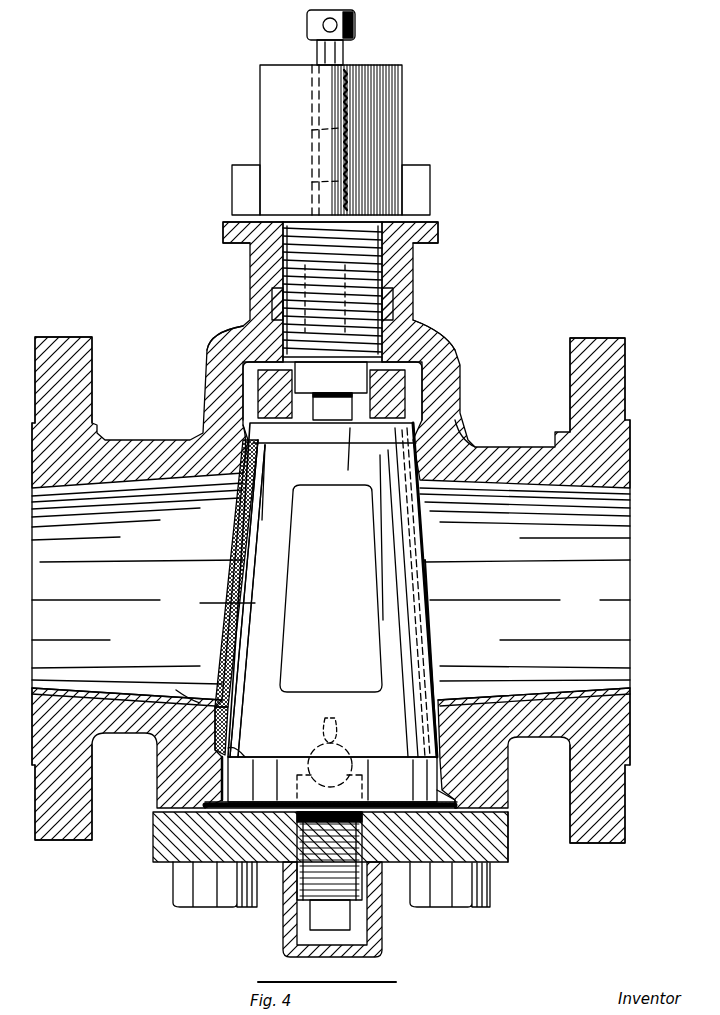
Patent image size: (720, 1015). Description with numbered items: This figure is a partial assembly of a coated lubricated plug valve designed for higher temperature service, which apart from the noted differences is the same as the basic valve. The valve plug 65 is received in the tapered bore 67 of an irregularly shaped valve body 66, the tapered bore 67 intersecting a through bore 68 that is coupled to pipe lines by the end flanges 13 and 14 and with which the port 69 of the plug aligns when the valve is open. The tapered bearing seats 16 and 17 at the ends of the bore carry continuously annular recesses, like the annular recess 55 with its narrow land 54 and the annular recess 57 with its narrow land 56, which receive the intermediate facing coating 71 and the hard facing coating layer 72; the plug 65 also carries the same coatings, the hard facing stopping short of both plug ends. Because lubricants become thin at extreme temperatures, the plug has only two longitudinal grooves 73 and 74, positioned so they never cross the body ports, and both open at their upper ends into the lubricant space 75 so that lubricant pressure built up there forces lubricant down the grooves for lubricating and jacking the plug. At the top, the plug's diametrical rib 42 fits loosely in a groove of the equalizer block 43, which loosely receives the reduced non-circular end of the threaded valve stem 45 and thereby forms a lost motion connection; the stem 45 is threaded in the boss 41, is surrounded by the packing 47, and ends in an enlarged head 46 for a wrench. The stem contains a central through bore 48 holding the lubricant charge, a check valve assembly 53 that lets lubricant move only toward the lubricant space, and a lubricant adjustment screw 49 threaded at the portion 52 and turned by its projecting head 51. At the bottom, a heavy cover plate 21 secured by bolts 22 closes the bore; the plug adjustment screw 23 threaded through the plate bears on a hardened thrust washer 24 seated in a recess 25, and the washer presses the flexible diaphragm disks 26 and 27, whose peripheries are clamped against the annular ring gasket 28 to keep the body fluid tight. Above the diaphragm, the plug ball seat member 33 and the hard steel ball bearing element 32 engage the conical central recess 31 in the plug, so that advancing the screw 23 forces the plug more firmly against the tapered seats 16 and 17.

The end flange 13 is at (62, 337).
The end flange 14 is at (598, 338).
The tapered bearing seat 16 is at (440, 697).
The tapered bearing seat 17 is at (455, 492).
The cover plate 21 is at (510, 840).
The bolts 22 is at (180, 898).
The plug adjustment screw 23 is at (380, 935).
The thrust washer 24 is at (295, 830).
The recess 25 is at (370, 830).
The diaphragm disk 26 is at (170, 832).
The diaphragm disk 27 is at (215, 808).
The annular ring gasket 28 is at (470, 800).
The conical central recess 31 is at (333, 712).
The ball bearing element 32 is at (320, 745).
The plug ball seat member 33 is at (345, 750).
The boss 41 is at (435, 342).
The diametrical upstanding rib 42 is at (350, 428).
The equalizer block 43 is at (418, 335).
The valve stem 45 is at (420, 246).
The enlarged head 46 is at (402, 118).
The packing 47 is at (392, 302).
The central through bore 48 is at (350, 100).
The lubricant adjustment screw 49 is at (343, 55).
The projecting head 51 is at (357, 26).
The threaded portion 52 is at (350, 150).
The check valve assembly 53 is at (350, 290).
The annular land 54 is at (222, 773).
The annular recess 55 is at (215, 735).
The annular land 56 is at (245, 438).
The annular recess 57 is at (243, 462).
The valve plug 65 is at (436, 586).
The valve body 66 is at (470, 432).
The tapered bore 67 is at (440, 642).
The through bore 68 is at (137, 700).
The port 69 is at (292, 600).
The intermediate facing coating 71 is at (250, 488).
The hard facing coating layer 72 is at (246, 510).
The longitudinal groove 73 is at (268, 467).
The longitudinal groove 74 is at (396, 466).
The lubricant space 75 is at (445, 354).